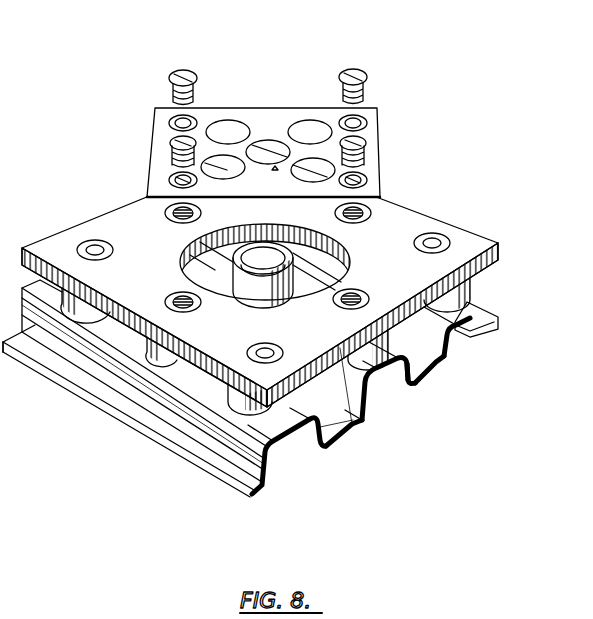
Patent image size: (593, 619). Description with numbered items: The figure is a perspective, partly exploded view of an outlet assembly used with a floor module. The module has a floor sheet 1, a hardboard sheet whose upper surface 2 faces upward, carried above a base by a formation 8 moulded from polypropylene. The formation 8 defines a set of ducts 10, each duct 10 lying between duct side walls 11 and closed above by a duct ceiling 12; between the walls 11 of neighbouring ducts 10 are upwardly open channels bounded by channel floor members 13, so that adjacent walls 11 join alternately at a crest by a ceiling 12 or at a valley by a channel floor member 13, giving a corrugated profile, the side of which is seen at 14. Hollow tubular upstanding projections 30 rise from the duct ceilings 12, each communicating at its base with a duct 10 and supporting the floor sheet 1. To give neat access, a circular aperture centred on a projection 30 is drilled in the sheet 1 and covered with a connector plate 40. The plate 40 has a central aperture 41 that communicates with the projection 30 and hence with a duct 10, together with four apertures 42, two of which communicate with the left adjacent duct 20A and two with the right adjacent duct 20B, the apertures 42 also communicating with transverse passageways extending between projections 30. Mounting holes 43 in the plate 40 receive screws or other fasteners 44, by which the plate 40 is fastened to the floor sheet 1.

The floor sheet 1 is at (475, 238).
The upper surface 2 is at (410, 223).
The formation 8 is at (133, 388).
The duct 10 is at (464, 344).
The duct side wall 11 is at (482, 316).
The duct ceiling 12 is at (385, 395).
The channel floor member 13 is at (260, 493).
The side face of base 14 is at (133, 435).
The left adjacent duct 20A is at (333, 422).
The right adjacent duct 20B is at (422, 362).
The upstanding projection 30 is at (262, 290).
The connector plate 40 is at (372, 130).
The aperture 41 is at (270, 147).
The apertures 42 is at (226, 127).
The mounting holes 43 is at (169, 123).
The fasteners 44 is at (183, 71).